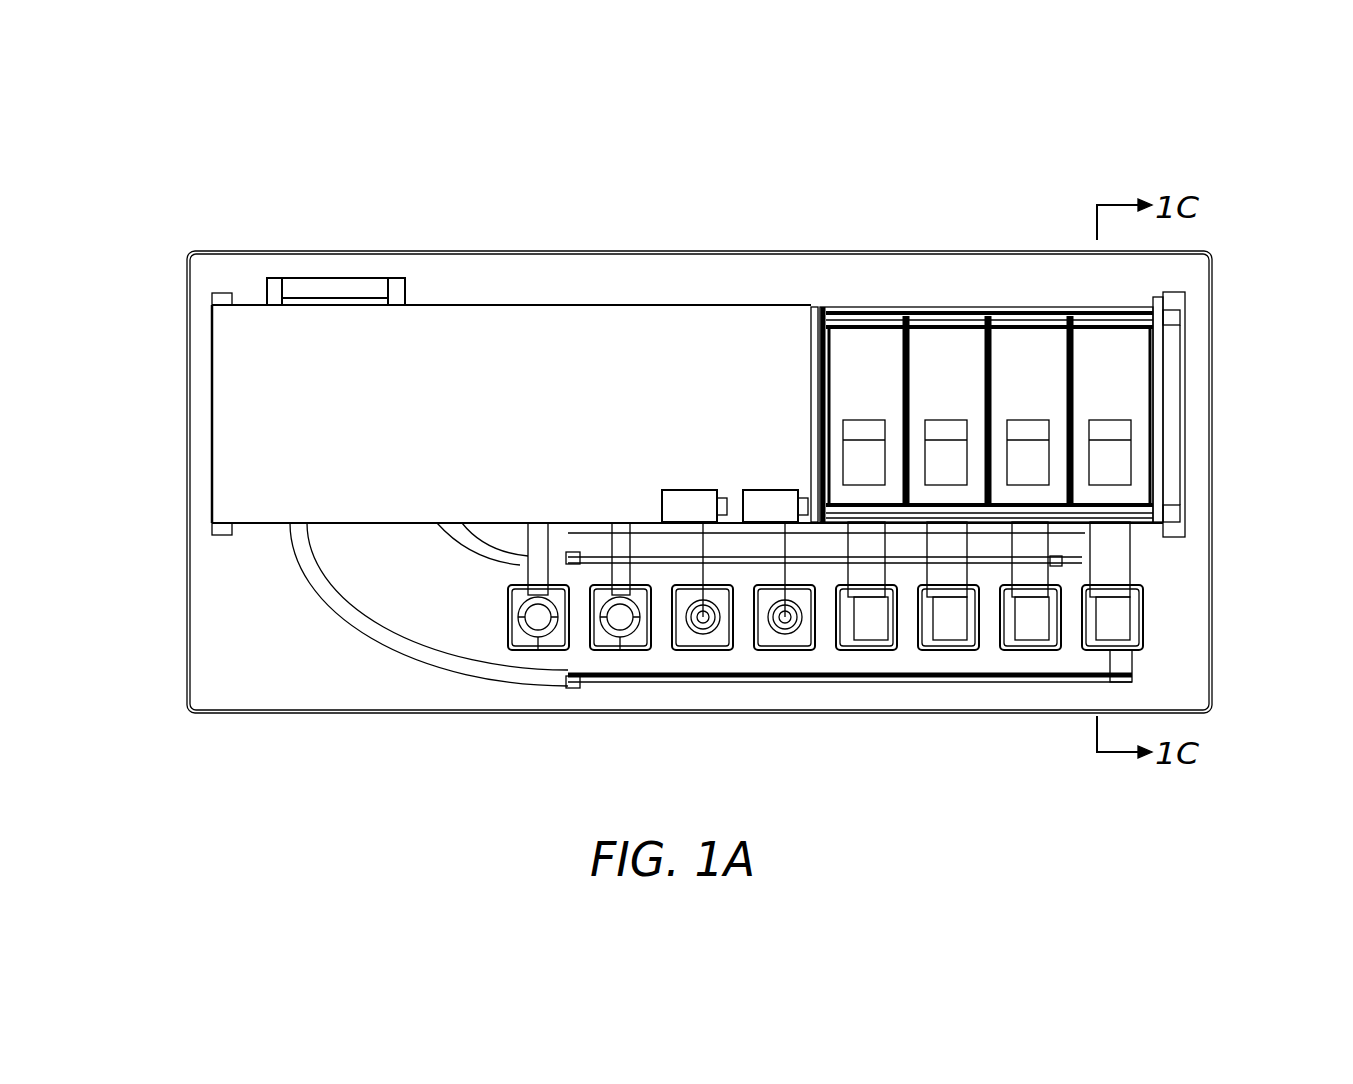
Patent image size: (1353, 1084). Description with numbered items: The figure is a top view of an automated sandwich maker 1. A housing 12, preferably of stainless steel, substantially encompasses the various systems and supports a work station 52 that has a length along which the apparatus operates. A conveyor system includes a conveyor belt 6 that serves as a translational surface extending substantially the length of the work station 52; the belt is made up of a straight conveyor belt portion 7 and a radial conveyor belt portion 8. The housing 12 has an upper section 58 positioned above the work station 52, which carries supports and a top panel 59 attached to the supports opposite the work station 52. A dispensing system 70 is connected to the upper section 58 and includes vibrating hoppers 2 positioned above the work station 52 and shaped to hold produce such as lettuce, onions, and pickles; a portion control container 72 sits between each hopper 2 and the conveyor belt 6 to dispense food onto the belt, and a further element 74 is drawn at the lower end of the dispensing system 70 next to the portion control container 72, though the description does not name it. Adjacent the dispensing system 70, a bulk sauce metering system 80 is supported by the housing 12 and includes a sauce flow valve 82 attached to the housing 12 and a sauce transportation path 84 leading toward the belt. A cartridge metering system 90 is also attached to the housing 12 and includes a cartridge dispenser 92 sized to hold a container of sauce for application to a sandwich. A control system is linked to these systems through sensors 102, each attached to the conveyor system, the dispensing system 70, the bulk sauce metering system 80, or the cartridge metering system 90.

The automated sandwich maker 1 is at (1250, 214).
The vibrating hoppers 2 is at (1035, 348).
The conveyor belt 6 is at (655, 680).
The straight conveyor belt portion 7 is at (905, 660).
The radial conveyor belt portion 8 is at (413, 597).
The housing 12 is at (170, 326).
The work station 52 is at (220, 675).
The upper section 58 is at (200, 380).
The top panel 59 is at (240, 415).
The dispensing system 70 is at (1195, 560).
The portion control container 72 is at (1120, 620).
The terminal conductor 74 is at (1122, 548).
The bulk sauce metering system 80 is at (688, 470).
The sauce flow valve 82 is at (790, 490).
The sauce transportation path 84 is at (790, 565).
The cartridge metering system 90 is at (618, 508).
The cartridge dispenser 92 is at (520, 583).
The sensors 102 is at (573, 688).